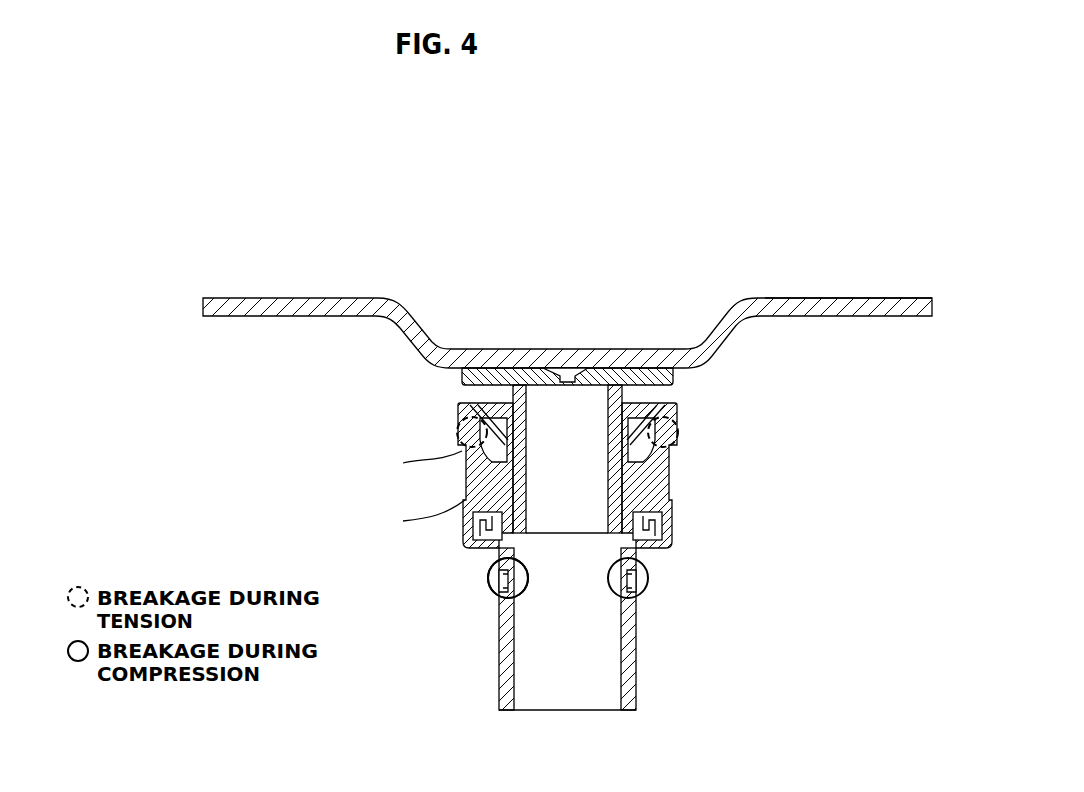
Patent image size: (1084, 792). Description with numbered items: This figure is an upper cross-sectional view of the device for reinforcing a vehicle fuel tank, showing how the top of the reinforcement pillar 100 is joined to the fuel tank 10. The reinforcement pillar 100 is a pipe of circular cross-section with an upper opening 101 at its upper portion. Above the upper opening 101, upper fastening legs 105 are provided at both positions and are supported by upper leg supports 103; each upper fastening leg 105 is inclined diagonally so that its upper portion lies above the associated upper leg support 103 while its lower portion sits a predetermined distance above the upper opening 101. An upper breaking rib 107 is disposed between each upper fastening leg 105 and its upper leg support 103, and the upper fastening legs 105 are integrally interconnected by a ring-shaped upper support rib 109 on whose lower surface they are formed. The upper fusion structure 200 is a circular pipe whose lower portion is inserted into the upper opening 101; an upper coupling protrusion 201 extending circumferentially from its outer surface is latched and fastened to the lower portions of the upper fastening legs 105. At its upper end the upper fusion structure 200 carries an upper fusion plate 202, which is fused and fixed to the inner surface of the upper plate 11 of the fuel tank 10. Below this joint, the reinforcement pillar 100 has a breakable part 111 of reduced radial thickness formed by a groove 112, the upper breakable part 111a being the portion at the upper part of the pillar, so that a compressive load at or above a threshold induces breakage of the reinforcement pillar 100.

The fuel tank 10 is at (811, 298).
The upper plate 11 is at (898, 297).
The reinforcement pillar 100 is at (637, 660).
The upper opening 101 is at (628, 497).
The upper leg support 103 is at (676, 471).
The upper fastening leg 105 is at (678, 442).
The upper breaking rib 107 is at (457, 433).
The upper support rib 109 is at (460, 403).
The breakable part 111 is at (456, 588).
The upper breakable part 111a is at (487, 572).
The groove 112 is at (648, 572).
The upper fusion structure 200 is at (512, 368).
The upper coupling protrusion 201 is at (465, 470).
The upper fusion plate 202 is at (674, 378).